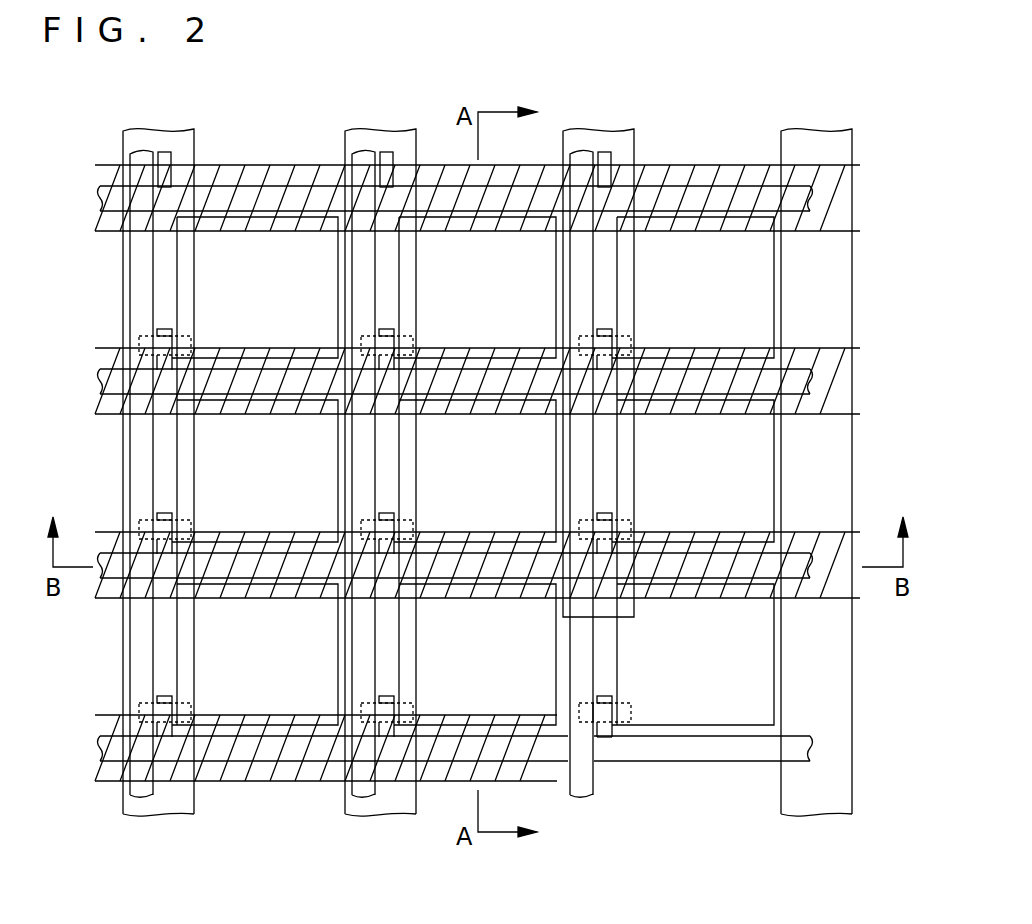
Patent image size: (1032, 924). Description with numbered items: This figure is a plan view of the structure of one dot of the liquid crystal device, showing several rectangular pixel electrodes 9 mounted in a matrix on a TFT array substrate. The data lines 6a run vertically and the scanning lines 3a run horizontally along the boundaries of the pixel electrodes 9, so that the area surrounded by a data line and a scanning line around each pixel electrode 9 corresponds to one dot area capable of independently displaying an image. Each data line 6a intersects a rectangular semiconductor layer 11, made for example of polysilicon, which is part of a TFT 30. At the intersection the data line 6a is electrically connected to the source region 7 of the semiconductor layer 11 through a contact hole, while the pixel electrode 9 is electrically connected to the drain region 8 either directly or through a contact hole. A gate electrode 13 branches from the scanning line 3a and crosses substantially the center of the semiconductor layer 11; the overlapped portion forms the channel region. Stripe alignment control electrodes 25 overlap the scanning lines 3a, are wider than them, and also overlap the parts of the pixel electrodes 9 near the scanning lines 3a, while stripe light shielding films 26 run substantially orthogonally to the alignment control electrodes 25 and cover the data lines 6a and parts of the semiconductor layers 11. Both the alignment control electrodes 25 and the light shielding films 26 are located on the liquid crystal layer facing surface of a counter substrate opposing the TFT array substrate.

The scanning line 3a is at (738, 394).
The data line 6a is at (353, 466).
The source region 7 is at (590, 703).
The drain region 8 is at (630, 709).
The pixel electrode 9 is at (490, 479).
The semiconductor layer 11 is at (579, 714).
The gate electrode 13 is at (607, 697).
The alignment control electrode 25 is at (280, 598).
The light shielding film 26 is at (170, 813).
The TFT 30 is at (607, 752).